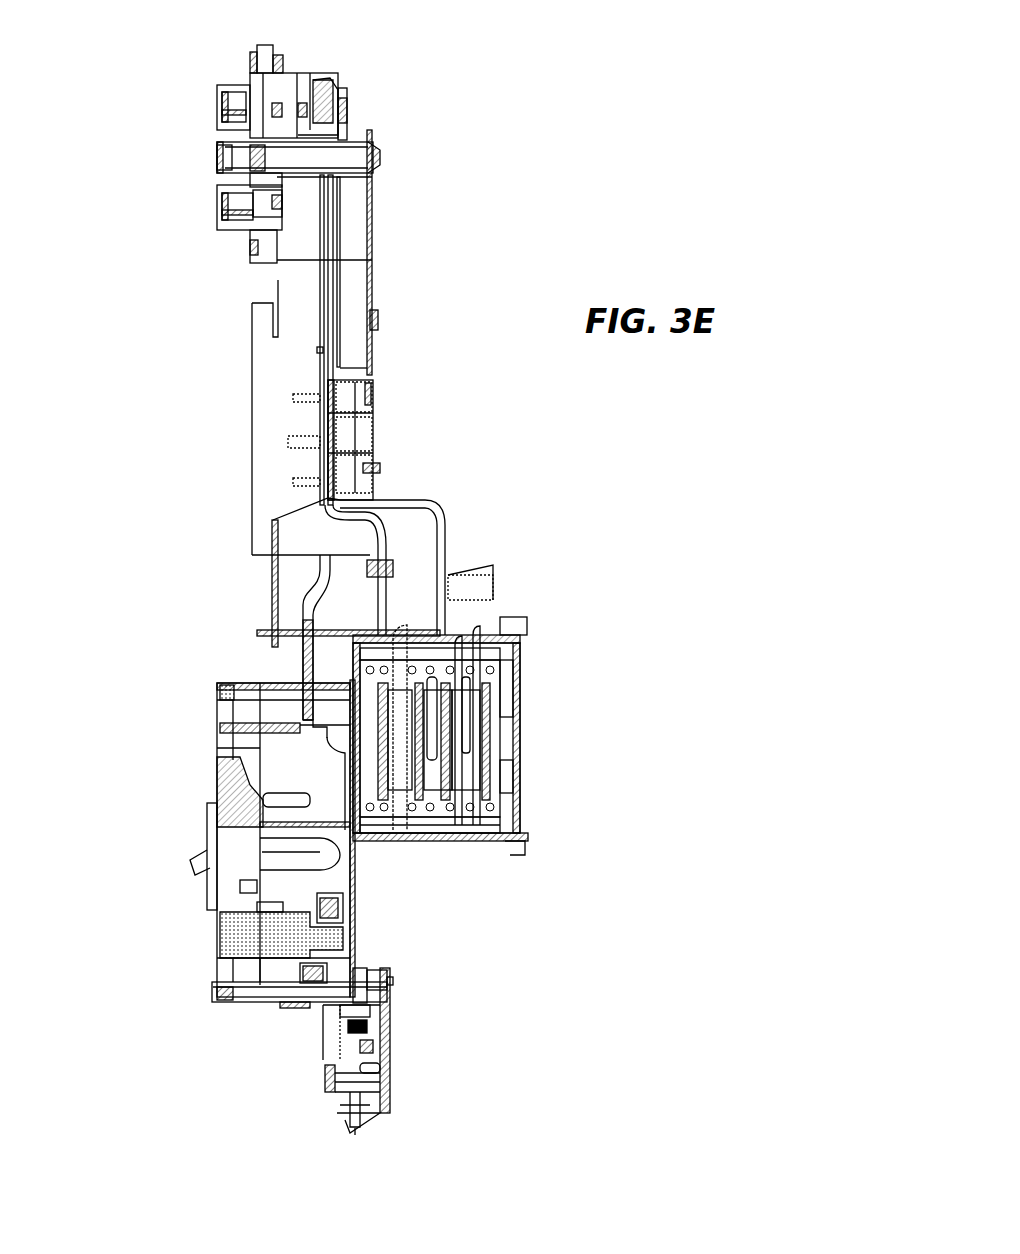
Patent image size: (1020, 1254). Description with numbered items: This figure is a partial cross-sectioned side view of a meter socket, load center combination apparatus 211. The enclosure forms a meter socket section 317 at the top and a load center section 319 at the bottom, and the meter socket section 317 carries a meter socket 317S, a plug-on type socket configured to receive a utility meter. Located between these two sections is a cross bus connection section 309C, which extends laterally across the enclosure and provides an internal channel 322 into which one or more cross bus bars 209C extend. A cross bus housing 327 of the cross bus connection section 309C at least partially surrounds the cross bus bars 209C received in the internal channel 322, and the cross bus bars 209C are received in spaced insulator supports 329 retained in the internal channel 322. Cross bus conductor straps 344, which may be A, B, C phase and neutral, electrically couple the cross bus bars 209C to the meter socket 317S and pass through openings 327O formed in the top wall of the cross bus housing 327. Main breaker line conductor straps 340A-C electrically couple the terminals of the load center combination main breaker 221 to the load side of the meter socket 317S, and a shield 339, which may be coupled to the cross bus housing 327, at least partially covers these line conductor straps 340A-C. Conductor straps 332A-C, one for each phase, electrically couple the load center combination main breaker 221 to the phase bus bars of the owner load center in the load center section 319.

The meter socket, load center combination apparatus 211 is at (378, 118).
The meter socket 317S is at (200, 155).
The meter socket section 317 is at (405, 112).
The shield 339 is at (272, 516).
The main breaker line conductor straps 340A-C is at (310, 653).
The openings 327O is at (398, 622).
The insulator supports 329 is at (505, 678).
The cross bus conductor straps 344 is at (405, 640).
The cross bus bars 209C is at (385, 782).
The cross bus connection section 309C is at (600, 625).
The cross bus housing 327 is at (440, 842).
The internal channel 322 is at (412, 838).
The load center combination main breaker 221 is at (214, 929).
The conductor straps 332A-C is at (308, 1020).
The load center section 319 is at (398, 1045).